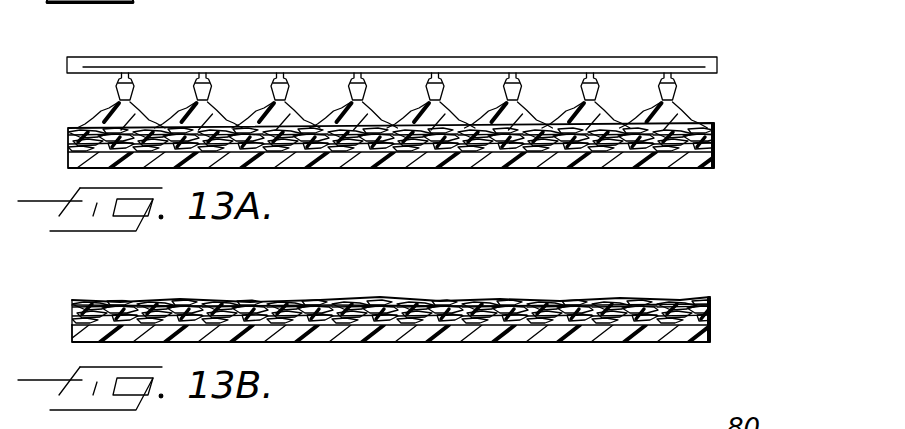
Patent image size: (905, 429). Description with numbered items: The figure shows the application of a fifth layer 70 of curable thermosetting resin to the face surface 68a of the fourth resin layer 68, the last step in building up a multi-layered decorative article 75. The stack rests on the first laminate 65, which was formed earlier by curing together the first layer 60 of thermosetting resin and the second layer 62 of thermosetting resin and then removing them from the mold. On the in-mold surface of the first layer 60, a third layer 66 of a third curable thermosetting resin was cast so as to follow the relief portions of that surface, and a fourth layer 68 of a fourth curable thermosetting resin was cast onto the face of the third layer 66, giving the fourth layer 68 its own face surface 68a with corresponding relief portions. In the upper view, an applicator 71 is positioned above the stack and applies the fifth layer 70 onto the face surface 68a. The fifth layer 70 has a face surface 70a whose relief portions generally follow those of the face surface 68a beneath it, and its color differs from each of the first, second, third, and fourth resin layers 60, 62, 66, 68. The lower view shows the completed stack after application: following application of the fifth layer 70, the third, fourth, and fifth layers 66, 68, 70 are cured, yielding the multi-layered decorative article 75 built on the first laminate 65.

In FIG. 13B, the first layer 60 is at (378, 314).
In FIG. 13B, the second layer 62 is at (452, 335).
In FIG. 13A, the first laminate 65 is at (420, 89).
In FIG. 13B, the third layer 66 is at (397, 308).
In FIG. 13B, the fourth layer 68 is at (607, 318).
In FIG. 13A, the face surface 68a is at (106, 137).
In FIG. 13A, the fifth layer 70 is at (662, 115).
In FIG. 13B, the fifth layer 70 is at (575, 307).
In FIG. 13B, the face surface 70a is at (363, 305).
In FIG. 13A, the applicator 71 is at (672, 63).
In FIG. 13B, the multi-layered decorative article 75 is at (421, 314).